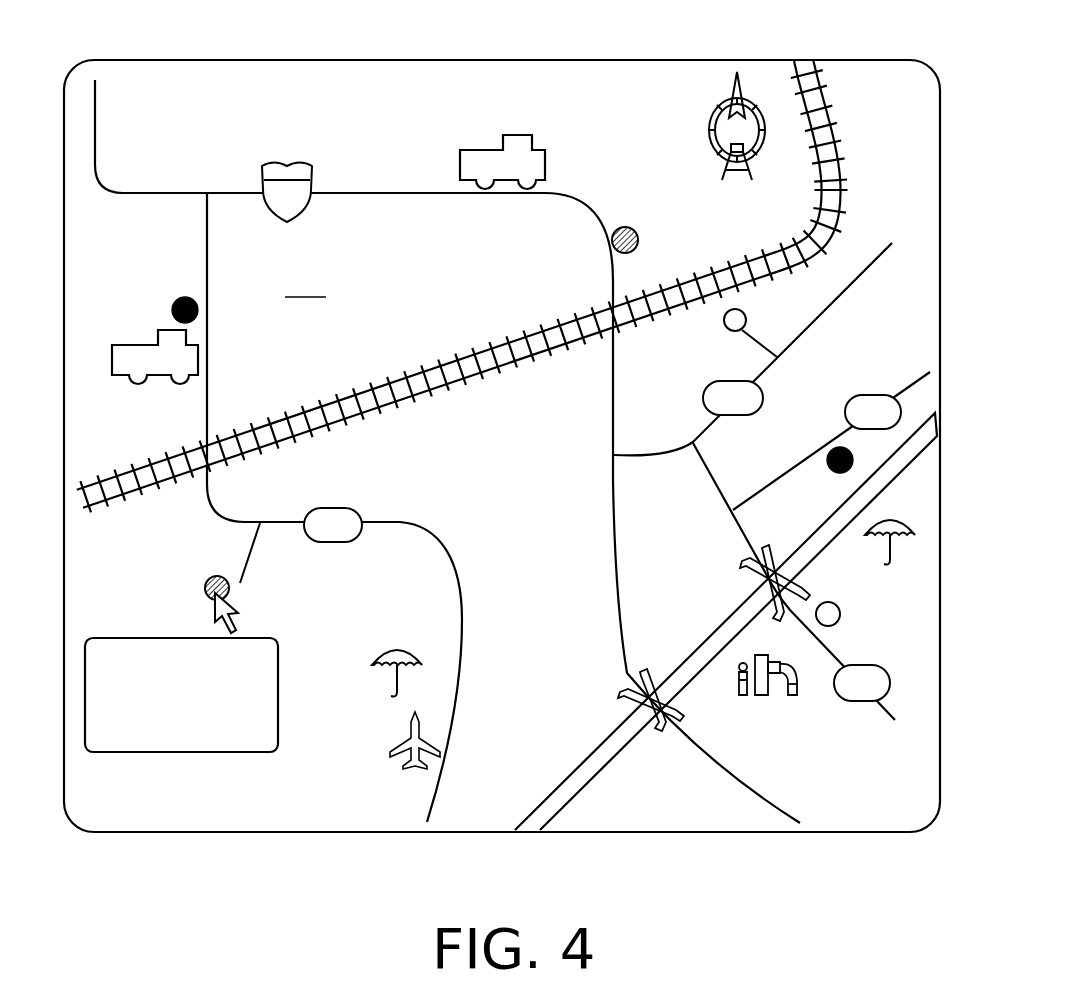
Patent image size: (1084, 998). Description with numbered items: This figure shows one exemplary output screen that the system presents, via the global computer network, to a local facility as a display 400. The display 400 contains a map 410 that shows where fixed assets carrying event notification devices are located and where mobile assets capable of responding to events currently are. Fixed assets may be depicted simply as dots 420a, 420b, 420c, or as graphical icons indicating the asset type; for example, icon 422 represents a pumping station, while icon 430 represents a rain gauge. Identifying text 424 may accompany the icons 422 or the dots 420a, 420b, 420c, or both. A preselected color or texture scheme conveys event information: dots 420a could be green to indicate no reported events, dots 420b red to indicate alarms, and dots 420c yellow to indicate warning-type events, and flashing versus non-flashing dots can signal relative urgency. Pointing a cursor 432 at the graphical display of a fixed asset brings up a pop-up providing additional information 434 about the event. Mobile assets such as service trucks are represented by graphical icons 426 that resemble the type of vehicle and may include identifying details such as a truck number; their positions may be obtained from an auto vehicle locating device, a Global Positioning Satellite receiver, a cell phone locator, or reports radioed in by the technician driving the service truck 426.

The display 400 is at (312, 50).
The map 410 is at (507, 445).
The dots 420a is at (744, 330).
The dots 420b is at (183, 297).
The dots 420c is at (628, 227).
The icon 422 is at (738, 686).
The identifying text 424 is at (803, 722).
The graphical icons 426 is at (487, 150).
The icon 430 is at (863, 532).
The cursor 432 is at (238, 597).
The additional information 434 is at (202, 752).